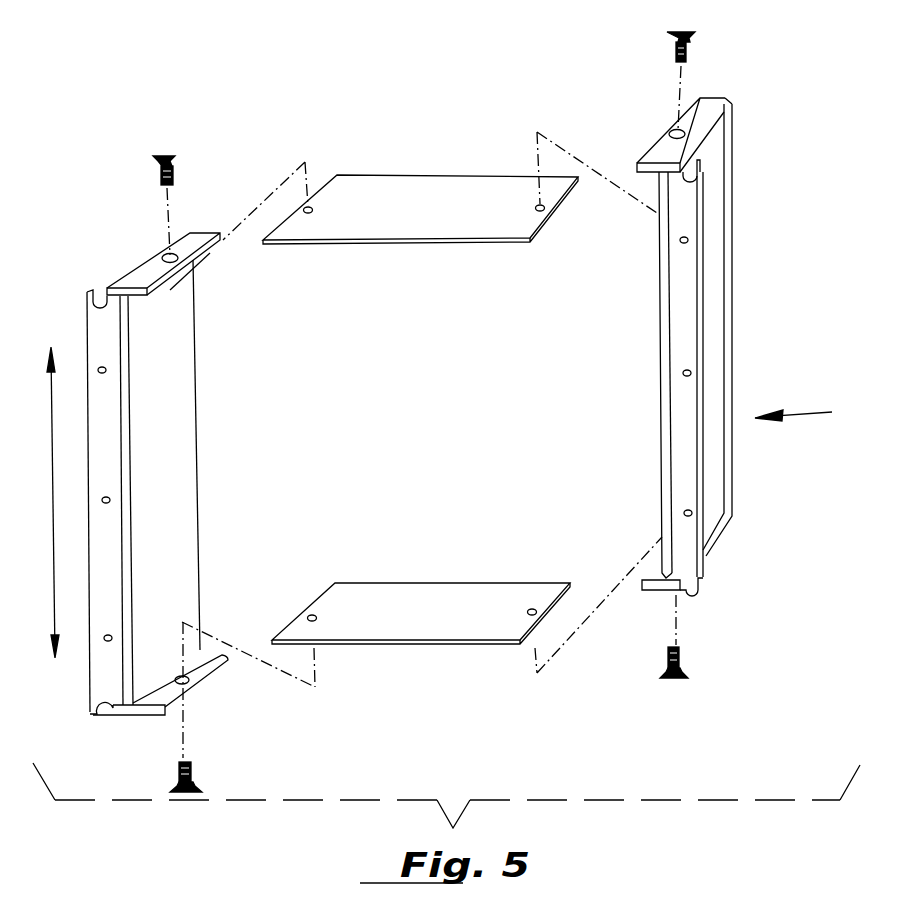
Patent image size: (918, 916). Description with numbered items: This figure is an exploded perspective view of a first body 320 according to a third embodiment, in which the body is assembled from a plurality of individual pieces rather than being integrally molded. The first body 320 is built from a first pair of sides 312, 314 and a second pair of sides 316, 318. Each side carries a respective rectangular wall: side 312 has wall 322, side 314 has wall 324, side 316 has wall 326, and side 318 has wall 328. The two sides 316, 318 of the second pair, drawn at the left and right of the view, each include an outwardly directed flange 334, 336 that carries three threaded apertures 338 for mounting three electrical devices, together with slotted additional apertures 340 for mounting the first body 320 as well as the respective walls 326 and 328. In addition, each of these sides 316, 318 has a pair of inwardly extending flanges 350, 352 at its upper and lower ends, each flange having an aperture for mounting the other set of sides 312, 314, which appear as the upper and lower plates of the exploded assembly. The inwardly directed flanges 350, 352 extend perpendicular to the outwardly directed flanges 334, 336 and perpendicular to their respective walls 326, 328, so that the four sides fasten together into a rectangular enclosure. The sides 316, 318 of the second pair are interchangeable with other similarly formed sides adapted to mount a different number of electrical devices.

The side of first pair 312 is at (420, 213).
The side of first pair 314 is at (421, 611).
The side of second pair 316 is at (181, 482).
The side of second pair 318 is at (693, 338).
The first body 320 is at (811, 409).
The rectangular wall 322 is at (425, 200).
The rectangular wall 324 is at (453, 620).
The rectangular wall 326 is at (195, 437).
The rectangular wall 328 is at (715, 303).
The outwardly directed flange 334 is at (108, 415).
The outwardly directed flange 336 is at (690, 460).
The threaded apertures 338 is at (108, 368).
The slotted apertures 340 is at (87, 305).
The inwardly extending flange 350 is at (187, 247).
The inwardly extending flange 352 is at (663, 148).